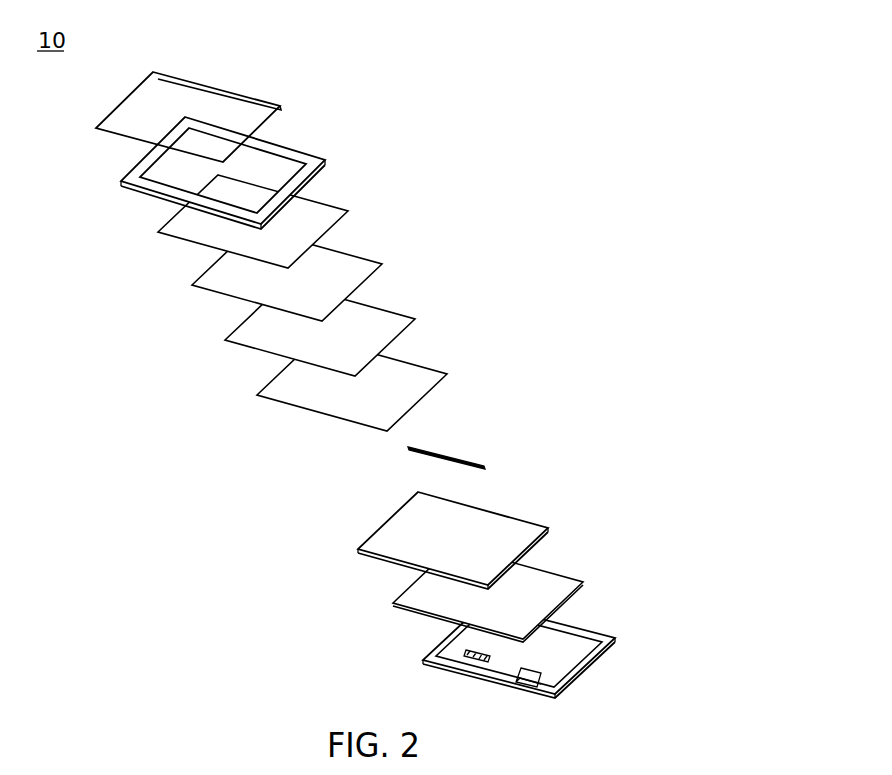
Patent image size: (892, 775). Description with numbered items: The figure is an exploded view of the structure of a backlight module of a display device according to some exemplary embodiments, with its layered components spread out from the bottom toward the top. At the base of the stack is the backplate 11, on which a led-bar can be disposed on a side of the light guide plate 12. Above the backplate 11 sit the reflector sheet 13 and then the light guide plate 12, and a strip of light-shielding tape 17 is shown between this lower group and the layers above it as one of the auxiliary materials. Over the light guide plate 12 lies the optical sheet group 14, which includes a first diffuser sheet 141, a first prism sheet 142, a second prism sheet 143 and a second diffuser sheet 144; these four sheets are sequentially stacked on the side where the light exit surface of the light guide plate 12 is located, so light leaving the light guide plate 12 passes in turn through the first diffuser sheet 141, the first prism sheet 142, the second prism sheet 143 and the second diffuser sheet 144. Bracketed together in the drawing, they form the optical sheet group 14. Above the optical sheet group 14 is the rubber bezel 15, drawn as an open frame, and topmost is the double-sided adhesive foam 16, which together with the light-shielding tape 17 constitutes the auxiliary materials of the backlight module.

The backplate 11 is at (563, 633).
The light guide plate 12 is at (487, 528).
The reflector sheet 13 is at (527, 590).
The optical sheet group 14 is at (582, 323).
The first diffuser sheet 141 is at (400, 375).
The first prism sheet 142 is at (377, 323).
The second prism sheet 143 is at (343, 267).
The second diffuser sheet 144 is at (322, 212).
The rubber bezel 15 is at (285, 148).
The double-sided adhesive foam 16 is at (248, 93).
The light-shielding tape 17 is at (447, 455).